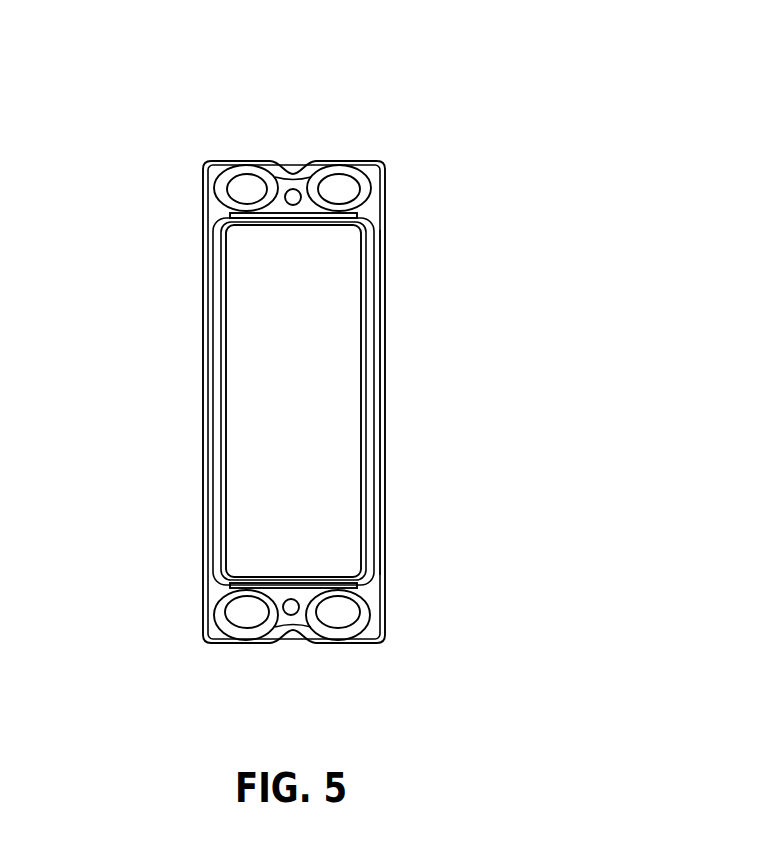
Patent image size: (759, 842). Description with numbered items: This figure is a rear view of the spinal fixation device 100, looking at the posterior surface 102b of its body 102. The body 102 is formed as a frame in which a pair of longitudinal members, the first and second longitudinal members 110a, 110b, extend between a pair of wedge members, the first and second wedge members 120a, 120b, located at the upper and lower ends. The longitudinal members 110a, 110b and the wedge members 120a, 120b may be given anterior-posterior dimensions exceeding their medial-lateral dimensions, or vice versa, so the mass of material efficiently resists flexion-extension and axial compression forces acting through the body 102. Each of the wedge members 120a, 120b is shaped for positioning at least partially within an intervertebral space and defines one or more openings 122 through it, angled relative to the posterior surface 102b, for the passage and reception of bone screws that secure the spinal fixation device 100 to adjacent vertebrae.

The spinal fixation device 100 is at (690, 112).
The body 102 is at (212, 253).
The posterior surface 102b is at (370, 465).
The first longitudinal member 110a is at (203, 398).
The second longitudinal member 110b is at (385, 383).
The first wedge member 120a is at (385, 190).
The second wedge member 120b is at (384, 620).
The opening 122 is at (240, 612).